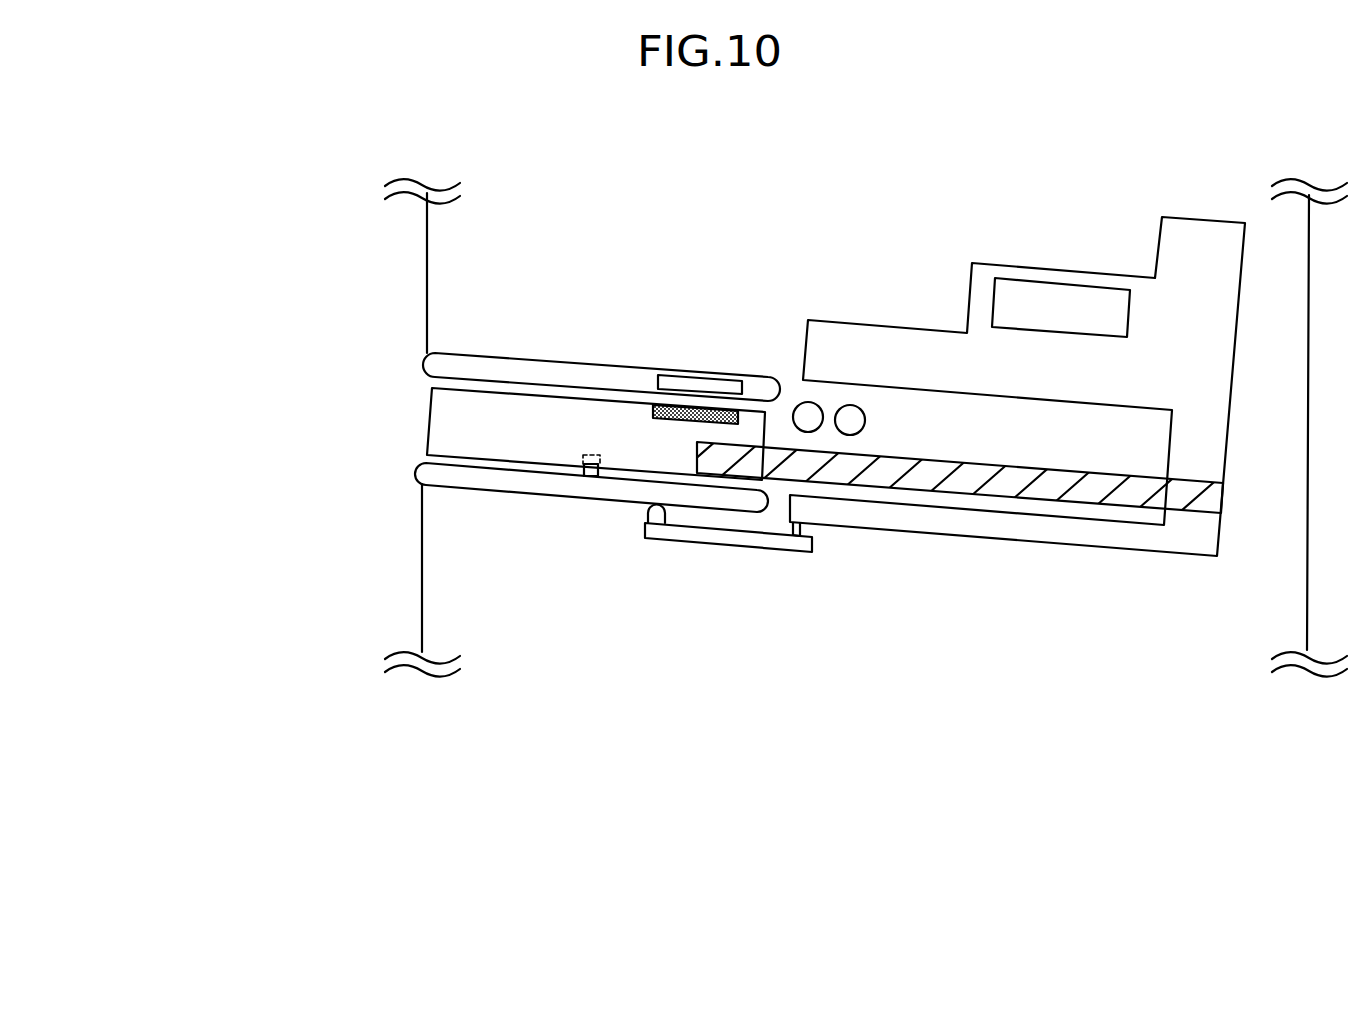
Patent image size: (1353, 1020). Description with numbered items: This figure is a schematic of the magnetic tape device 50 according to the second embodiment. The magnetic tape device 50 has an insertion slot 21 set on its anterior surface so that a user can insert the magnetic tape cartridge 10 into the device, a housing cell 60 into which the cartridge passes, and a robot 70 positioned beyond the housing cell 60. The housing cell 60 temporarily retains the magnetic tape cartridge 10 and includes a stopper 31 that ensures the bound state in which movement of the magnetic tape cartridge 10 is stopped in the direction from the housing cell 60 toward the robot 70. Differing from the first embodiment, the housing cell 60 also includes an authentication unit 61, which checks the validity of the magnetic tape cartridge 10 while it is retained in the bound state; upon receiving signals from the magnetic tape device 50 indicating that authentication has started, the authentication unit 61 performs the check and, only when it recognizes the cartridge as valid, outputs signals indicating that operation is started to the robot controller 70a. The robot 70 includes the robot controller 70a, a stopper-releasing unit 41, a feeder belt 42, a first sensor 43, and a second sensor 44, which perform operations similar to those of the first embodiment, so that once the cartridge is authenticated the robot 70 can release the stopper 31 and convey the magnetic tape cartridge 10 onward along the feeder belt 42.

The magnetic tape device 50 is at (427, 253).
The insertion slot 21 is at (425, 396).
The housing cell 60 is at (449, 359).
The magnetic tape cartridge 10 is at (443, 430).
The authentication unit 61 is at (687, 387).
The first sensor 43 is at (802, 402).
The second sensor 44 is at (849, 405).
The robot 70 is at (1017, 339).
The robot controller 70a is at (1092, 302).
The feeder belt 42 is at (963, 476).
The stopper 31 is at (583, 476).
The stopper-releasing unit 41 is at (730, 548).